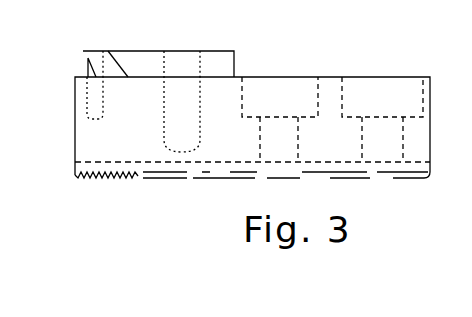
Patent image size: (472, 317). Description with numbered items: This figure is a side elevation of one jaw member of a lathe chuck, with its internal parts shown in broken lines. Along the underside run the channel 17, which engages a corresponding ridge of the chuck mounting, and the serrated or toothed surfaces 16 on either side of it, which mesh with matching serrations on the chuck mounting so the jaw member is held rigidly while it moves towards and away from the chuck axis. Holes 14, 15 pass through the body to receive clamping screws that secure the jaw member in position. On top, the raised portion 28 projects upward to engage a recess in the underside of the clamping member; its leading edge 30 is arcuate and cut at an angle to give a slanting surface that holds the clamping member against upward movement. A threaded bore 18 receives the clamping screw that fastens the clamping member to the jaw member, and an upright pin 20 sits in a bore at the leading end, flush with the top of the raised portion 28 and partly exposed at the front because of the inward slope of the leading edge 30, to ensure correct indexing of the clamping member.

The hole 14 is at (380, 93).
The hole 15 is at (288, 95).
The serrated surface 16 is at (112, 182).
The channel 17 is at (177, 167).
The threaded bore 18 is at (188, 60).
The upright pin 20 is at (87, 70).
The raised portion 28 is at (144, 57).
The leading edge 30 is at (90, 52).